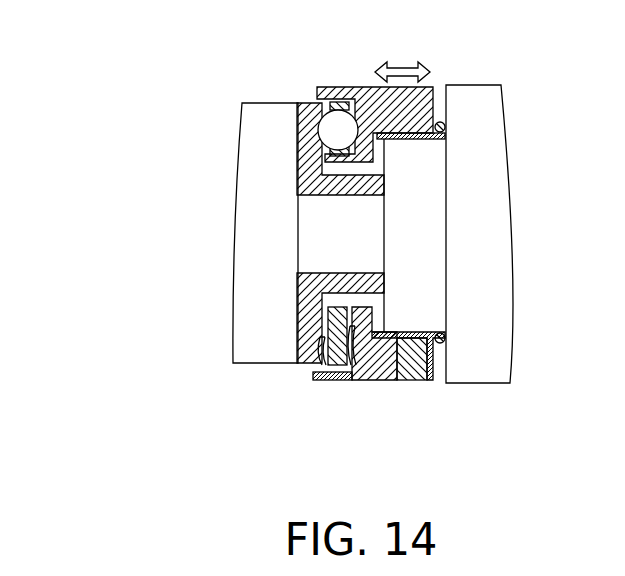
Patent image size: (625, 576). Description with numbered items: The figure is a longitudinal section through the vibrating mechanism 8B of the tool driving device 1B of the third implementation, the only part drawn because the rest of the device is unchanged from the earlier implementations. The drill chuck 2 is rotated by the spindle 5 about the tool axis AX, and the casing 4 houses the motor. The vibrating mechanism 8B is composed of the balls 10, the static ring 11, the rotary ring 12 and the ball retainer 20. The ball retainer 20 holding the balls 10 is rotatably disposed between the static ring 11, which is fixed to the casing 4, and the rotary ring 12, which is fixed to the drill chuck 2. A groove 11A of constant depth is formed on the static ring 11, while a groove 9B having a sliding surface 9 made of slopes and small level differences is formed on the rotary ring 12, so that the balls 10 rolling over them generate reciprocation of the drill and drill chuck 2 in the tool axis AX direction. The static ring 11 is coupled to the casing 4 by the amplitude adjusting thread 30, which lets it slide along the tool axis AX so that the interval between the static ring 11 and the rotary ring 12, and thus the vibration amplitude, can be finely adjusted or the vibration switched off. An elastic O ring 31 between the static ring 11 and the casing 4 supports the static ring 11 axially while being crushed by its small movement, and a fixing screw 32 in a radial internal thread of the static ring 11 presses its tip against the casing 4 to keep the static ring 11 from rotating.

The tool driving device 1B is at (112, 124).
The drill chuck 2 is at (255, 364).
The casing 4 is at (480, 383).
The spindle 5 is at (313, 220).
The vibrating mechanism 8B is at (320, 80).
The sliding surface 9 is at (343, 87).
The groove 9B is at (327, 380).
The balls 10 is at (342, 126).
The static ring 11 is at (370, 380).
The groove 11A is at (347, 380).
The rotary ring 12 is at (305, 364).
The ball retainer 20 is at (322, 323).
The amplitude adjusting thread 30 is at (413, 140).
The O ring 31 is at (440, 344).
The fixing screw 32 is at (408, 380).
The tool axis AX is at (195, 237).